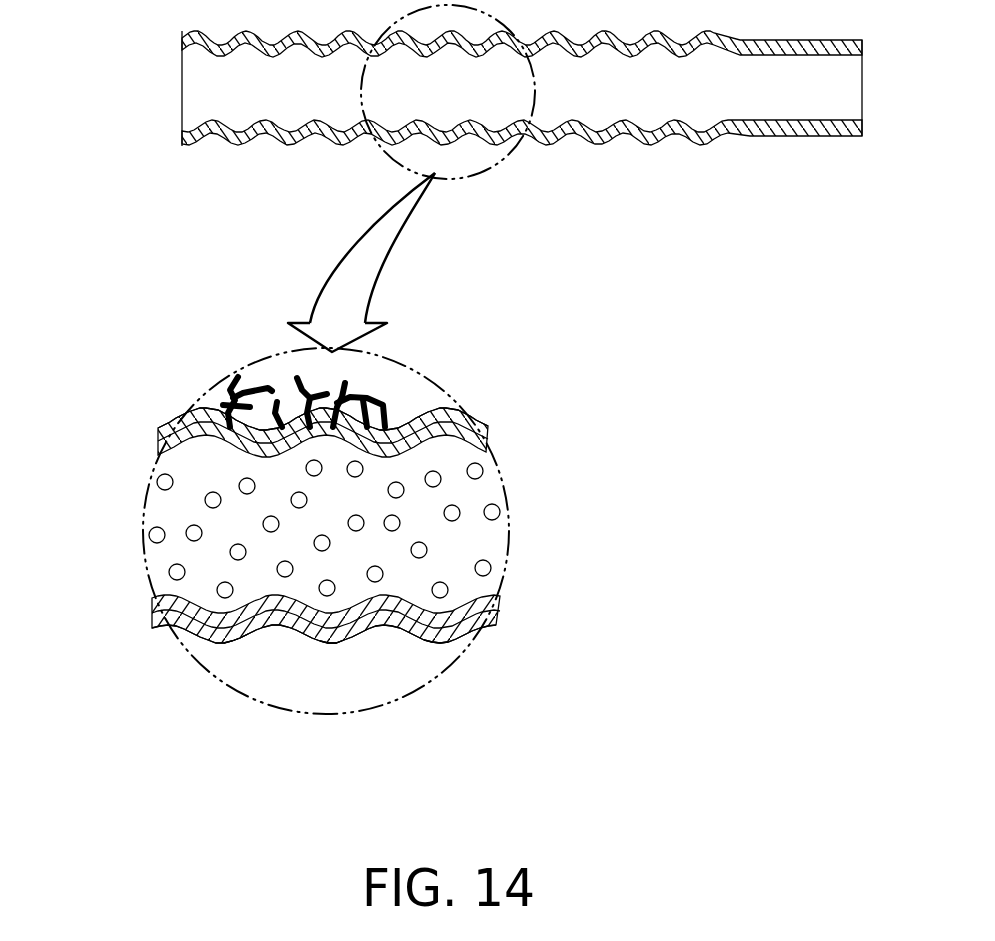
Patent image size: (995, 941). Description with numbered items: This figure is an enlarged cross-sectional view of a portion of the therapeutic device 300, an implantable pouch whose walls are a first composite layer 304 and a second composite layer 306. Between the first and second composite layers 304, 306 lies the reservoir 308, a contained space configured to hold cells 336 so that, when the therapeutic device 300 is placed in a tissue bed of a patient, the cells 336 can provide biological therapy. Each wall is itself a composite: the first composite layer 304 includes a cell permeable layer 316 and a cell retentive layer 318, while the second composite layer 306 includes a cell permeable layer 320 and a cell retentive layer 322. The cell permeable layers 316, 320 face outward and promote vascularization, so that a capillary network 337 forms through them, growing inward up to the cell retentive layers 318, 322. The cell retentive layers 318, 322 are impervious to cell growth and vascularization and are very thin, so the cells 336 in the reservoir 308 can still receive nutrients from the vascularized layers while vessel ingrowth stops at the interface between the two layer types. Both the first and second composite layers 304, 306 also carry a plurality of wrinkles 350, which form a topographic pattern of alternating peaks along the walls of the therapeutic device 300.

The therapeutic device 300 is at (600, 144).
The first composite layer 304 is at (395, 427).
The second composite layer 306 is at (385, 627).
The reservoir 308 is at (181, 510).
The cell permeable layer 316 is at (480, 418).
The cell retentive layer 318 is at (492, 453).
The cell permeable layer 320 is at (463, 636).
The cell retentive layer 322 is at (497, 605).
The cells 336 is at (189, 539).
The capillary network 337 is at (297, 380).
The wrinkles 350 is at (243, 645).